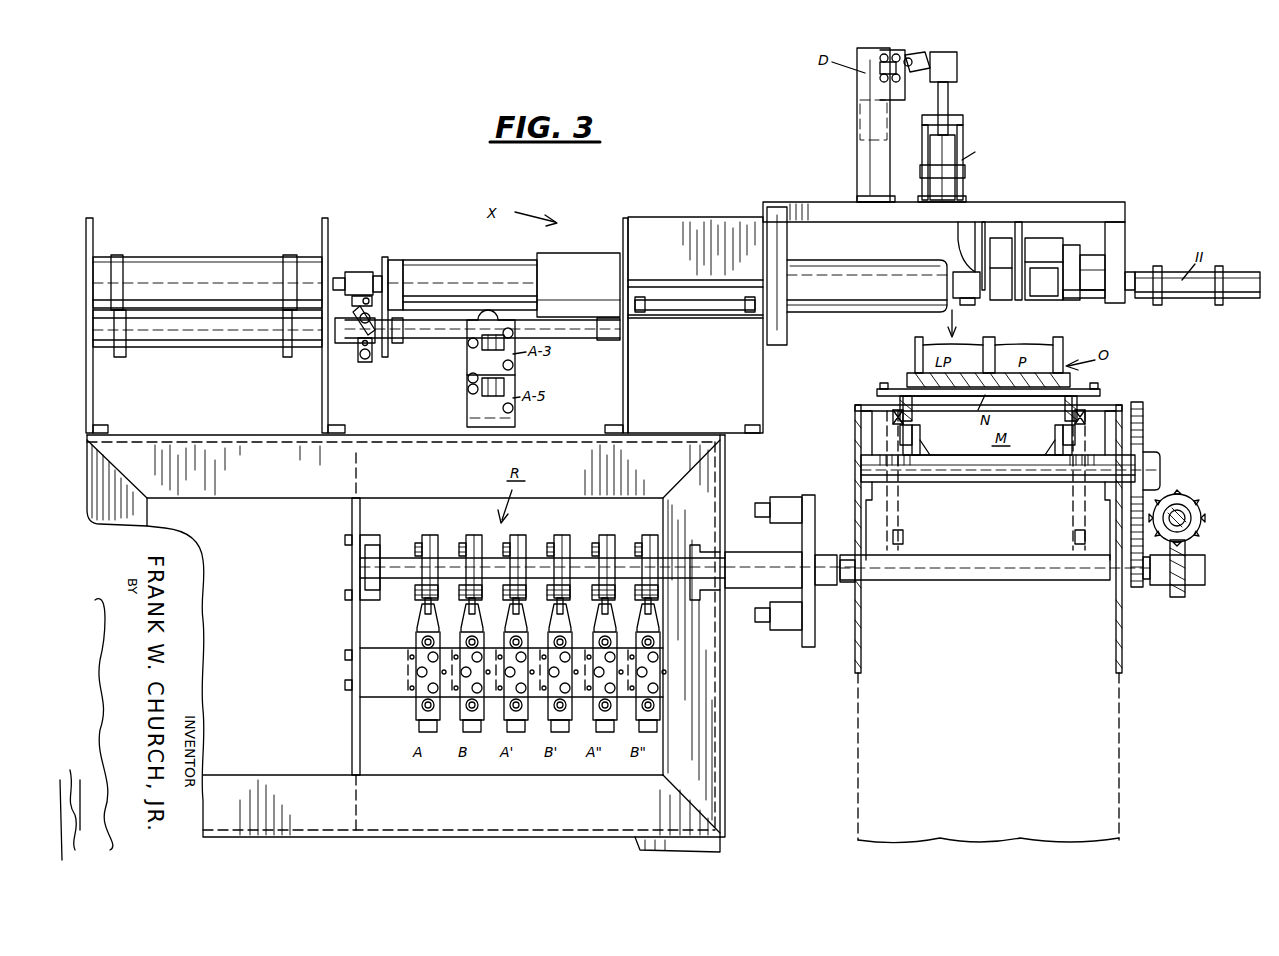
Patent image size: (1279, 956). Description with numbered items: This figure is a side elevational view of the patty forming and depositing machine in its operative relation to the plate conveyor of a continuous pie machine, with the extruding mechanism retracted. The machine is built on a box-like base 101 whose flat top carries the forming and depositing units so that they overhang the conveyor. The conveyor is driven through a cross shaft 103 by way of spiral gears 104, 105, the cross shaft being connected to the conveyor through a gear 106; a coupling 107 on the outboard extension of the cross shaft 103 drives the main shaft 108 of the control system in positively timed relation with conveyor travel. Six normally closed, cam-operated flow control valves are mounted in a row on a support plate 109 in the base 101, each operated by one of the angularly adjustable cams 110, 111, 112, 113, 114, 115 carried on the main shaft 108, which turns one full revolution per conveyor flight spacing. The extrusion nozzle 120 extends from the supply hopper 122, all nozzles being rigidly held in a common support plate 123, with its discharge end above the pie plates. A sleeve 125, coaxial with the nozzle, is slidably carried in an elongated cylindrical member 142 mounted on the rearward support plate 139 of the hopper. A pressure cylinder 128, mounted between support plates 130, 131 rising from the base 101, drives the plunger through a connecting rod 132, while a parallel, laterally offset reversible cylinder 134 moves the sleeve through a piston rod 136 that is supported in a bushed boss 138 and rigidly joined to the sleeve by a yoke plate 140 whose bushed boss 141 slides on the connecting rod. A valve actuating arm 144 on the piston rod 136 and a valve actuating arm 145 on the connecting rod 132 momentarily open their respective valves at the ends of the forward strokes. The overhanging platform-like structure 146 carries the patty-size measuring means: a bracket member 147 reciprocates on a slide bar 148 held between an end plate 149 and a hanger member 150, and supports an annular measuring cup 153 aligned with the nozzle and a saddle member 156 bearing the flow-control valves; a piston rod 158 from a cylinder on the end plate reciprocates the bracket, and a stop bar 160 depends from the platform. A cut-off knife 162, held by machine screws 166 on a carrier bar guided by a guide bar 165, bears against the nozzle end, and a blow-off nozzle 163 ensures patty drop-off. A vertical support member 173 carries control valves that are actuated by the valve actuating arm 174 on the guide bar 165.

The base 101 is at (708, 737).
The cross shaft 103 is at (1000, 578).
The spiral gear 104 is at (1177, 494).
The spiral gear 105 is at (1178, 590).
The gear 106 is at (1145, 430).
The coupling 107 is at (800, 647).
The main shaft 108 is at (365, 585).
The support plate 109 is at (383, 690).
The cam 110 is at (425, 535).
The cam 111 is at (472, 534).
The cam 112 is at (521, 534).
The cam 113 is at (565, 535).
The cam 114 is at (610, 535).
The cam 115 is at (652, 535).
The extrusion nozzle 120 is at (822, 311).
The supply hopper 122 is at (685, 258).
The support plate 123 is at (778, 338).
The sleeve 125 is at (497, 286).
The pressure cylinder 128 is at (166, 289).
The support plate 130 is at (328, 232).
The support plate 131 is at (93, 232).
The connecting rod 132 is at (346, 272).
The reversible cylinder 134 is at (166, 332).
The piston rod 136 is at (422, 334).
The boss 138 is at (606, 340).
The rearward support plate 139 is at (628, 378).
The yoke plate 140 is at (384, 345).
The boss 141 is at (385, 262).
The cylindrical member 142 is at (583, 253).
The valve actuating arm 144 is at (364, 362).
The valve actuating arm 145 is at (360, 322).
The platform-like structure 146 is at (1046, 238).
The bracket member 147 is at (1071, 250).
The slide bar 148 is at (1091, 252).
The end plate 149 is at (1118, 226).
The hanger member 150 is at (988, 238).
The measuring cup 153 is at (968, 300).
The saddle member 156 is at (1043, 250).
The piston rod 158 is at (1092, 297).
The stop bar 160 is at (1020, 238).
The cut-off knife 162 is at (967, 243).
The blow-off nozzle 163 is at (953, 240).
The guide bar 165 is at (943, 100).
The machine screw 166 is at (945, 165).
The support member 173 is at (862, 172).
The valve actuating arm 174 is at (907, 58).